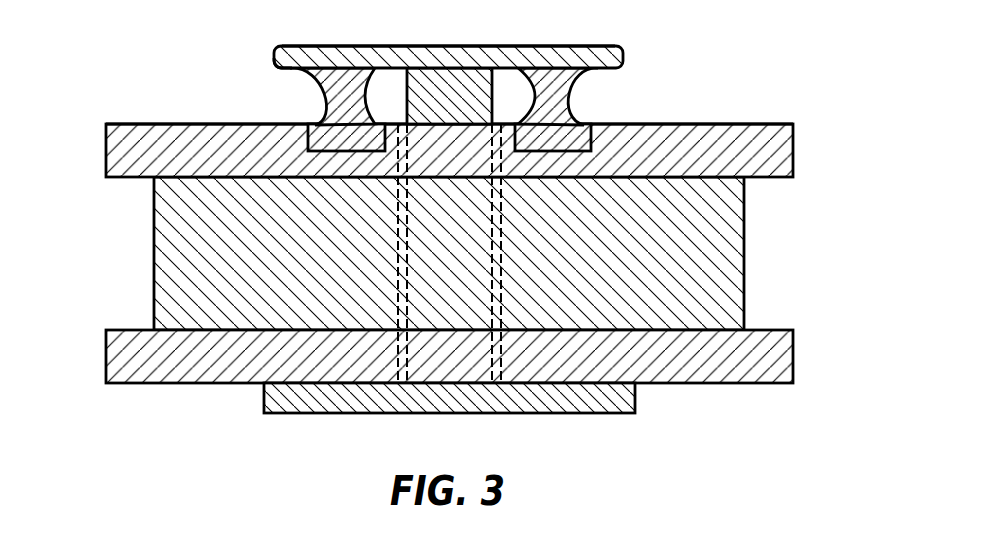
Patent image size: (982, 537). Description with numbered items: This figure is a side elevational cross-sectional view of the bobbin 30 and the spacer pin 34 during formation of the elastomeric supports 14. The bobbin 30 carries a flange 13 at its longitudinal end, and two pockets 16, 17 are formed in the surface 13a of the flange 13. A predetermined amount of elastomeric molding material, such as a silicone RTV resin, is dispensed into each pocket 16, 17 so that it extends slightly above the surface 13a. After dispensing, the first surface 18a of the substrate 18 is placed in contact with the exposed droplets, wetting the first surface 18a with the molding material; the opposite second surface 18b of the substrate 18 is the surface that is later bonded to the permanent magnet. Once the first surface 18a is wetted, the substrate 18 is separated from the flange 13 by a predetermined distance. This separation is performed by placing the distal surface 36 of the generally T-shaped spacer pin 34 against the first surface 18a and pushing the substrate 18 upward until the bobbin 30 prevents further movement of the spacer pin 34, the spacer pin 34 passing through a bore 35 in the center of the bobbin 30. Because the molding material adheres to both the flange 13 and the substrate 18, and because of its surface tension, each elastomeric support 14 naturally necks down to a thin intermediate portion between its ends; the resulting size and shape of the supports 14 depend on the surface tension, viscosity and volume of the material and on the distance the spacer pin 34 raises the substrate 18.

The flange 13 is at (793, 150).
The surface of the flange 13a is at (730, 124).
The elastomeric support 14 is at (340, 96).
The pocket 16 is at (578, 142).
The pocket 17 is at (318, 142).
The substrate 18 is at (623, 63).
The first surface of the substrate 18a is at (283, 69).
The second surface of the substrate 18b is at (342, 45).
The bobbin 30 is at (445, 233).
The spacer pin 34 is at (635, 398).
The bore 35 is at (497, 350).
The distal surface of the spacer pin 36 is at (453, 83).